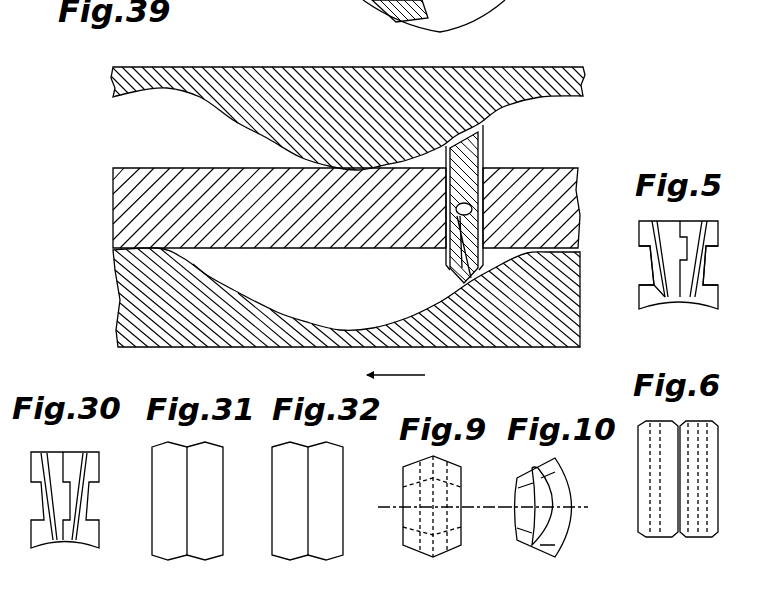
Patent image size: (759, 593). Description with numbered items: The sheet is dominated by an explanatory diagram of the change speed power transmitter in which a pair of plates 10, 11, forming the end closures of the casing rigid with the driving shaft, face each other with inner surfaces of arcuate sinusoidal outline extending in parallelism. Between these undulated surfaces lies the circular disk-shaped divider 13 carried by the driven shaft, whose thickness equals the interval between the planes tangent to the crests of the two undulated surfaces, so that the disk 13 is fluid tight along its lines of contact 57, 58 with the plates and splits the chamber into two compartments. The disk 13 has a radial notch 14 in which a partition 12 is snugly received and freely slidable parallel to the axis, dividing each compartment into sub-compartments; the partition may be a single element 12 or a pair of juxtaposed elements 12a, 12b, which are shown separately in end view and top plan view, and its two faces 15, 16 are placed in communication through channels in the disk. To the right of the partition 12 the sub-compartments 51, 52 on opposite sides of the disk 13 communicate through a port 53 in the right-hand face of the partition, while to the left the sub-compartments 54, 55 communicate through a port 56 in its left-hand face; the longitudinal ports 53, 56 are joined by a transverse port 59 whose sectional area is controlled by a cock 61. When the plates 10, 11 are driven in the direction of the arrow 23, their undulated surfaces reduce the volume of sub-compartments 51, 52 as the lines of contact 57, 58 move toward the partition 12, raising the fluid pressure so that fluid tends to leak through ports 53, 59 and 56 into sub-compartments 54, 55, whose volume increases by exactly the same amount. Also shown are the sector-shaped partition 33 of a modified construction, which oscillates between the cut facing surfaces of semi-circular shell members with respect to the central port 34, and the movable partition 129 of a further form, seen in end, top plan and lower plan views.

In FIG. 39, the plate 10 is at (583, 317).
In FIG. 39, the plate 11 is at (586, 80).
In FIG. 39, the partition 12 is at (470, 165).
In FIG. 5, the partition 12 is at (678, 265).
In FIG. 5, the partition element 12a is at (710, 297).
In FIG. 6, the partition element 12a is at (700, 533).
In FIG. 5, the partition element 12b is at (672, 262).
In FIG. 6, the partition element 12b is at (668, 532).
In FIG. 39, the disk-shaped divider 13 is at (135, 205).
In FIG. 39, the radial notch 14 is at (493, 229).
In FIG. 5, the face of the partition 15 is at (656, 283).
In FIG. 39, the face of the partition 16 is at (487, 150).
In FIG. 5, the face of the partition 16 is at (705, 281).
In FIG. 39, the arrow 23 is at (396, 384).
In FIG. 9, the sector-shaped partition 33 is at (412, 516).
In FIG. 10, the sector-shaped partition 33 is at (565, 498).
In FIG. 39, the central port 34 is at (411, 16).
In FIG. 39, the sub-compartment 51 is at (495, 256).
In FIG. 39, the sub-compartment 52 is at (165, 105).
In FIG. 39, the port 53 is at (485, 188).
In FIG. 39, the sub-compartment 54 is at (338, 308).
In FIG. 39, the sub-compartment 55 is at (447, 143).
In FIG. 39, the port 56 is at (447, 166).
In FIG. 39, the line of contact 57 is at (543, 253).
In FIG. 39, the line of contact 58 is at (352, 163).
In FIG. 39, the transverse port 59 is at (452, 280).
In FIG. 39, the cock 61 is at (465, 260).
In FIG. 30, the movable partition 129 is at (68, 548).
In FIG. 31, the movable partition 129 is at (198, 560).
In FIG. 32, the movable partition 129 is at (328, 552).